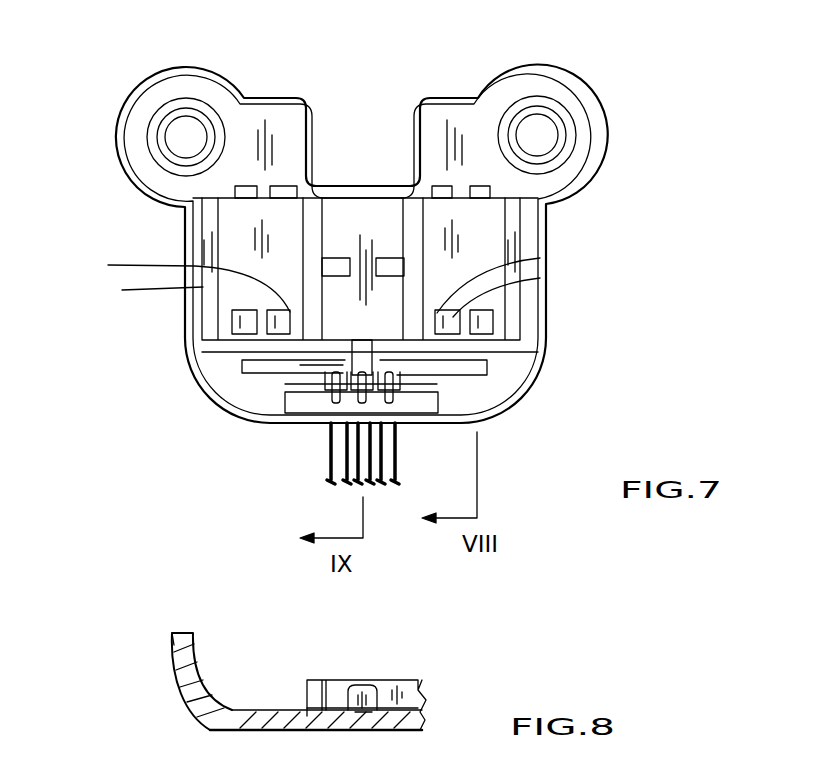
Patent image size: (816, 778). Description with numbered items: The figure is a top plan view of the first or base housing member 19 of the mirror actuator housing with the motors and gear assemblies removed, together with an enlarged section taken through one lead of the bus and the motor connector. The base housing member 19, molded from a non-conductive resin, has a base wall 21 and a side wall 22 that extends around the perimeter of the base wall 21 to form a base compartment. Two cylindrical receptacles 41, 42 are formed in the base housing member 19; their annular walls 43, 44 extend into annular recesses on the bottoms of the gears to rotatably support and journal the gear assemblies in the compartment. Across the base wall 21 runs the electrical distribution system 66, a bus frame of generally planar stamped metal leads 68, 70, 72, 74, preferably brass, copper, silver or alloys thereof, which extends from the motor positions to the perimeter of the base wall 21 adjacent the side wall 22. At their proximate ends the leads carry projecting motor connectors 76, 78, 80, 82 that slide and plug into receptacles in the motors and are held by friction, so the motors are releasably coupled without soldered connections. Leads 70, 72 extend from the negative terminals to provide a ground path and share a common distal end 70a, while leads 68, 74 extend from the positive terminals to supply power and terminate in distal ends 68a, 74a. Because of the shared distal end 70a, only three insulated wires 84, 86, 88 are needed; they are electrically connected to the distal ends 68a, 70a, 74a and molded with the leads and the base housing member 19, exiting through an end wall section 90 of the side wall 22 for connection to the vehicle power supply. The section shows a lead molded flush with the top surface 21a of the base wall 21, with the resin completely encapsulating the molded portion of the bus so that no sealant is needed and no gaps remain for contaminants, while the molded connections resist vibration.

In FIG. 7, the first or base housing member 19 is at (546, 237).
In FIG. 8, the first or base housing member 19 is at (160, 677).
In FIG. 7, the base wall 21 is at (383, 223).
In FIG. 8, the base wall 21 is at (417, 730).
In FIG. 7, the top surface of base wall 21a is at (368, 234).
In FIG. 8, the top surface of base wall 21a is at (288, 708).
In FIG. 7, the side wall 22 is at (527, 383).
In FIG. 8, the side wall 22 is at (197, 637).
In FIG. 7, the cylindrical receptacle 41 is at (596, 72).
In FIG. 7, the cylindrical receptacle 42 is at (128, 72).
In FIG. 7, the annular wall 43 is at (567, 125).
In FIG. 7, the annular wall 44 is at (193, 103).
In FIG. 7, the electrical distribution system 66 is at (220, 393).
In FIG. 7, the lead 68 is at (215, 340).
In FIG. 7, the distal end of lead 68a is at (313, 367).
In FIG. 7, the lead 70 is at (145, 298).
In FIG. 7, the common distal end of leads 70a is at (357, 367).
In FIG. 7, the lead 72 is at (540, 278).
In FIG. 8, the lead 72 is at (362, 730).
In FIG. 7, the lead 74 is at (473, 363).
In FIG. 8, the lead 74 is at (258, 710).
In FIG. 7, the distal end of lead 74a is at (392, 370).
In FIG. 7, the motor connector 76 is at (232, 318).
In FIG. 7, the motor connector 78 is at (182, 284).
In FIG. 7, the motor connector 80 is at (540, 258).
In FIG. 8, the motor connector 80 is at (368, 688).
In FIG. 7, the motor connector 82 is at (490, 319).
In FIG. 7, the wire 84 is at (337, 462).
In FIG. 7, the wire 86 is at (372, 487).
In FIG. 7, the wire 88 is at (400, 468).
In FIG. 7, the end wall section 90 is at (437, 428).
In FIG. 8, the end wall section 90 is at (173, 658).